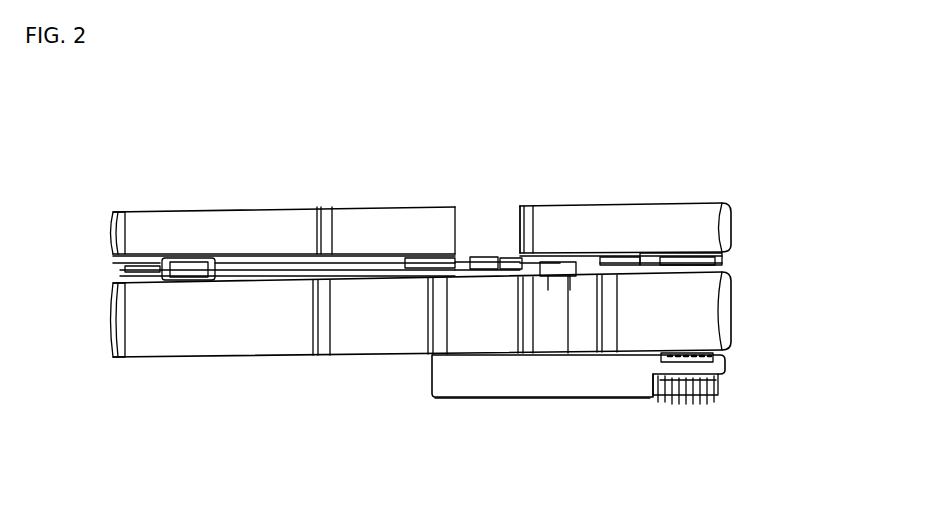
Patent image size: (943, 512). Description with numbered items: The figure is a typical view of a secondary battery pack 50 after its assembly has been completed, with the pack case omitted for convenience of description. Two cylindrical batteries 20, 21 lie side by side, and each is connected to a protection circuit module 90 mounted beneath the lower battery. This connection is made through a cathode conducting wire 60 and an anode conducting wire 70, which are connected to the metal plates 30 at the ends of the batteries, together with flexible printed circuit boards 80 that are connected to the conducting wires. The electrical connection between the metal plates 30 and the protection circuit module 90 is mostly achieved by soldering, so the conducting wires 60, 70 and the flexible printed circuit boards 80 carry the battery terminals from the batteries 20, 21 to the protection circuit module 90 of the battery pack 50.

The secondary battery pack 50 is at (59, 100).
The battery 20 is at (190, 220).
The battery 21 is at (205, 343).
The metal plate 30 is at (110, 217).
The cathode conducting wire 60 is at (270, 263).
The anode conducting wire 70 is at (633, 253).
The flexible printed circuit board 80 is at (582, 290).
The protection circuit module 90 is at (557, 385).